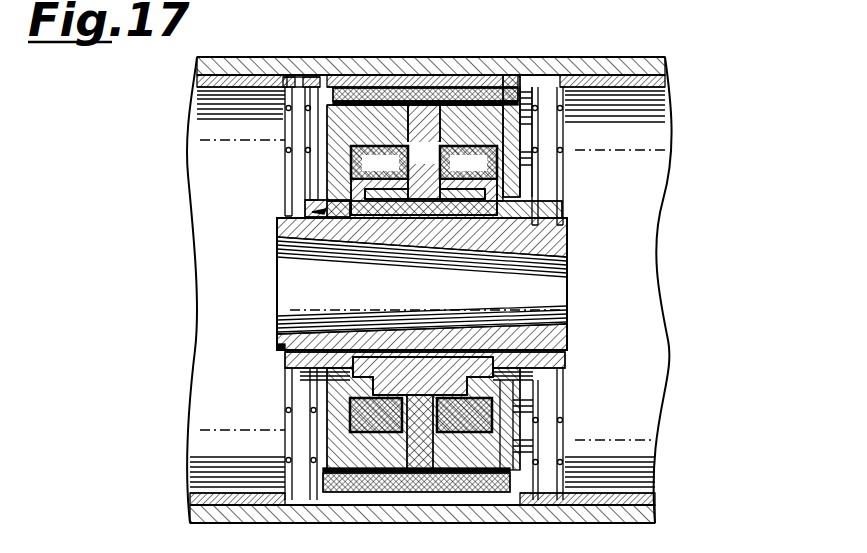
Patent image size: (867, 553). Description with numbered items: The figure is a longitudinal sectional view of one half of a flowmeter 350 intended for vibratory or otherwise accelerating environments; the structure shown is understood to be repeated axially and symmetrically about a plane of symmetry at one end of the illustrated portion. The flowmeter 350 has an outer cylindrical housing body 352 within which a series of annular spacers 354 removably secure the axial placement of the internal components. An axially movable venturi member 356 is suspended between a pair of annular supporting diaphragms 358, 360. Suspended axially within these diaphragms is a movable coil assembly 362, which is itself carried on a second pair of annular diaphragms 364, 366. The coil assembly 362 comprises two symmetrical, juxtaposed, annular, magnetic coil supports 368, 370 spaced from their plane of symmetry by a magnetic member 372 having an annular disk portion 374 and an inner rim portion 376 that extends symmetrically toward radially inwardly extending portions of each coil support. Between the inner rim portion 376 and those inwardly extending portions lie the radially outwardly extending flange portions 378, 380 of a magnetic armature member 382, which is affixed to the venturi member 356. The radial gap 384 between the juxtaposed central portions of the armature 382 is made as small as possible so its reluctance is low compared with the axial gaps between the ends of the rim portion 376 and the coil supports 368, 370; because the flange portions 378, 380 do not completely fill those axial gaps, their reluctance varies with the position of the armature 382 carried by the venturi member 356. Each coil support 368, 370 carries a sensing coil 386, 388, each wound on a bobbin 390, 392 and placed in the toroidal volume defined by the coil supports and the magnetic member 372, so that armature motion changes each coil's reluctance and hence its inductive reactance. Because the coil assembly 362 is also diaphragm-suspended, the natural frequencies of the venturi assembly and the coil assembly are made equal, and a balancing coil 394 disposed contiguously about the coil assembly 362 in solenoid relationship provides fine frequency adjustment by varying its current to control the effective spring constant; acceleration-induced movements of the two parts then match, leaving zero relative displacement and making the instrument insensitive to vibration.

The flowmeter 350 is at (592, 56).
The outer cylindrical housing body 352 is at (512, 60).
The annular spacers 354 is at (313, 75).
The axially movable venturi member 356 is at (422, 284).
The annular supporting diaphragm 358 is at (286, 173).
The annular supporting diaphragm 360 is at (566, 366).
The movable coil assembly 362 is at (310, 214).
The annular diaphragm 364 is at (306, 135).
The annular diaphragm 366 is at (540, 152).
The annular magnetic coil support 368 is at (326, 398).
The annular magnetic coil support 370 is at (505, 458).
The magnetic member 372 is at (446, 86).
The annular disk portion 374 is at (438, 161).
The inner rim portion 376 is at (462, 205).
The radially outwardly extending flange portion 378 is at (362, 235).
The radially outwardly extending flange portion 380 is at (517, 198).
The magnetic armature member 382 is at (416, 238).
The radial gap 384 is at (480, 215).
The sensing coil 386 is at (379, 162).
The sensing coil 388 is at (468, 162).
The bobbin 390 is at (350, 425).
The bobbin 392 is at (500, 420).
The balancing coil 394 is at (383, 88).